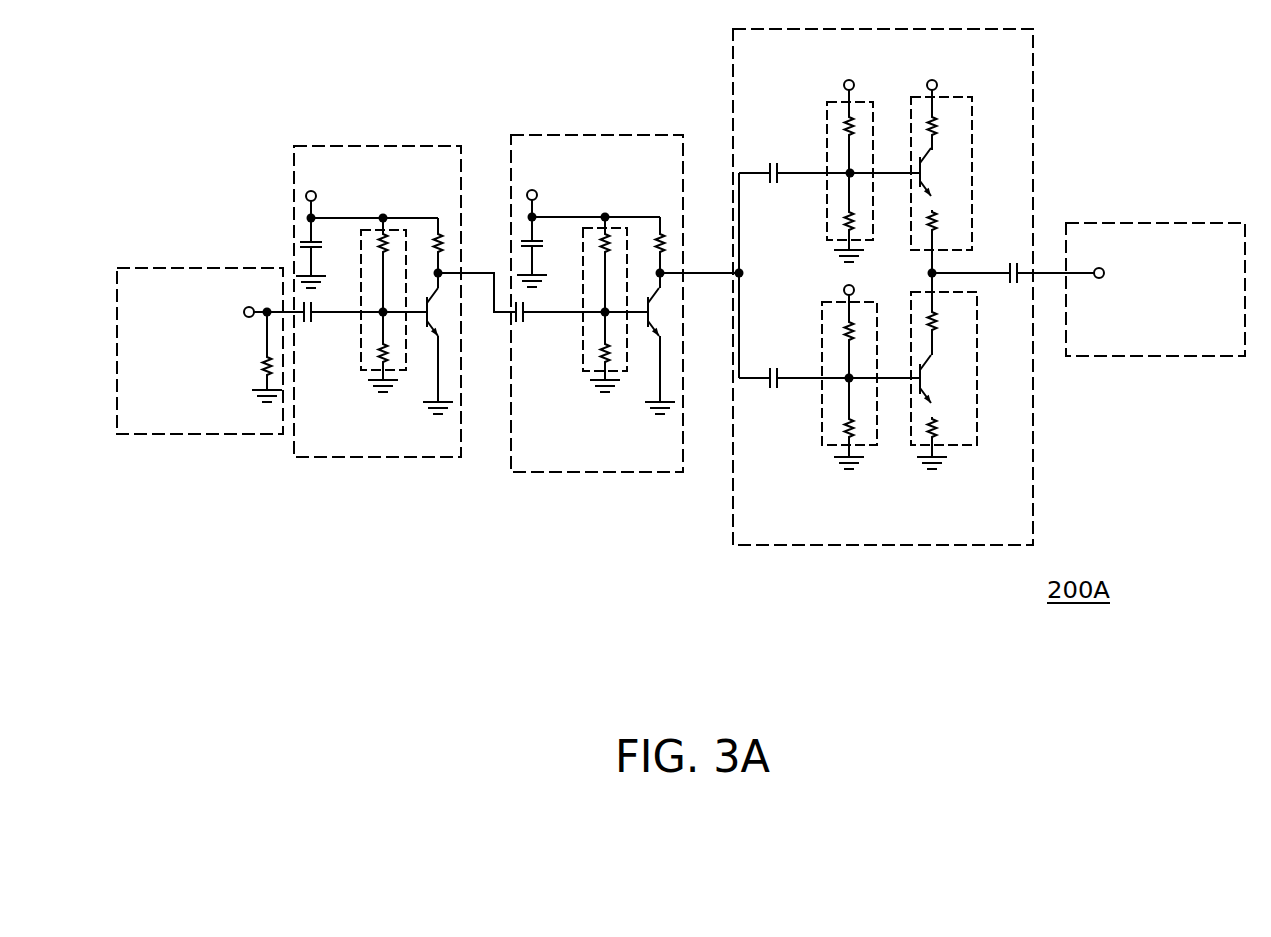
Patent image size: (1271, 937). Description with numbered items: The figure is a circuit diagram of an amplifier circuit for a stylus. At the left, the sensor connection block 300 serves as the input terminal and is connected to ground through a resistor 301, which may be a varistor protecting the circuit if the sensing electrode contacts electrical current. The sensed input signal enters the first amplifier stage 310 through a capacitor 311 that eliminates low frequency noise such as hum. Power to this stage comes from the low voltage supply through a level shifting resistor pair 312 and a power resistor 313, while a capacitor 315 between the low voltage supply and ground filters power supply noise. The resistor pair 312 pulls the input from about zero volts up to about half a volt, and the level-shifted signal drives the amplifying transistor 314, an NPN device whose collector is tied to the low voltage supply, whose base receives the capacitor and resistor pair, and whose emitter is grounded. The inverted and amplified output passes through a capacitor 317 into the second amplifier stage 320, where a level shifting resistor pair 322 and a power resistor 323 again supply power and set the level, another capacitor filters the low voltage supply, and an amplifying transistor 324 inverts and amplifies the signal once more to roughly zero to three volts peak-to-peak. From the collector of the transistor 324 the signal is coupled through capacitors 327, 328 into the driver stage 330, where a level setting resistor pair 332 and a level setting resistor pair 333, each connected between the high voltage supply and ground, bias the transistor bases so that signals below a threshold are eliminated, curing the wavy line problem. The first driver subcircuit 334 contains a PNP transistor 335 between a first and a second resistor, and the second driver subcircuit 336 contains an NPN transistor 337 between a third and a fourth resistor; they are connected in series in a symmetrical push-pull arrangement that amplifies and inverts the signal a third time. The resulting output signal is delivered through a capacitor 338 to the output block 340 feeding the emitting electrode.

The sensor connection block 300 is at (217, 434).
The resistor 301 is at (262, 371).
The first amplifier stage 310 is at (383, 457).
The capacitor 311 is at (311, 323).
The level shifting resistor pair 312 is at (361, 356).
The power resistor 313 is at (443, 243).
The amplifying transistor 314 is at (441, 322).
The capacitor 315 is at (323, 243).
The capacitor 317 is at (523, 323).
The second amplifier stage 320 is at (603, 472).
The level shifting resistor pair 322 is at (583, 356).
The power resistor 323 is at (665, 243).
The amplifying transistor 324 is at (662, 322).
The capacitor 327 is at (775, 185).
The capacitor 328 is at (775, 366).
The driver stage 330 is at (880, 545).
The level setting resistor pair 332 is at (827, 152).
The level setting resistor pair 333 is at (822, 321).
The first driver subcircuit 334 is at (972, 122).
The PNP transistor 335 is at (934, 168).
The second driver subcircuit 336 is at (977, 430).
The NPN transistor 337 is at (934, 375).
The capacitor 338 is at (1013, 262).
The signal output block 340 is at (1140, 356).